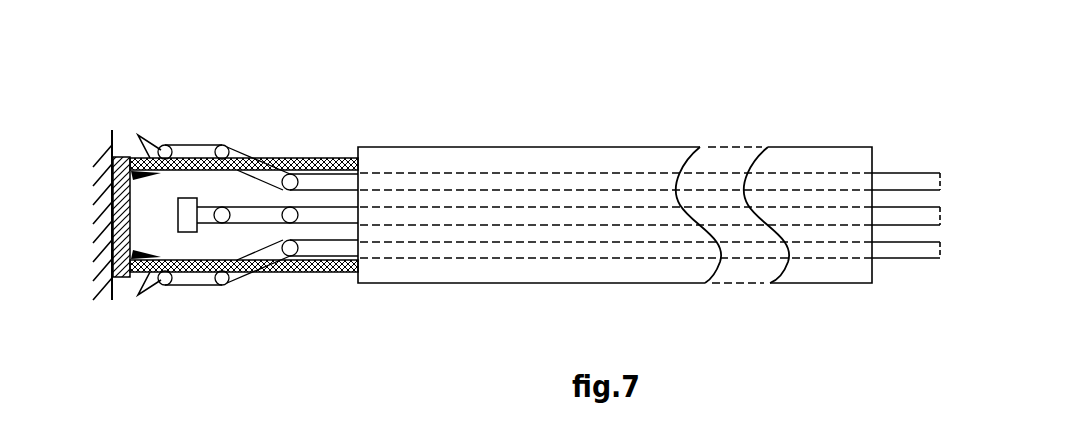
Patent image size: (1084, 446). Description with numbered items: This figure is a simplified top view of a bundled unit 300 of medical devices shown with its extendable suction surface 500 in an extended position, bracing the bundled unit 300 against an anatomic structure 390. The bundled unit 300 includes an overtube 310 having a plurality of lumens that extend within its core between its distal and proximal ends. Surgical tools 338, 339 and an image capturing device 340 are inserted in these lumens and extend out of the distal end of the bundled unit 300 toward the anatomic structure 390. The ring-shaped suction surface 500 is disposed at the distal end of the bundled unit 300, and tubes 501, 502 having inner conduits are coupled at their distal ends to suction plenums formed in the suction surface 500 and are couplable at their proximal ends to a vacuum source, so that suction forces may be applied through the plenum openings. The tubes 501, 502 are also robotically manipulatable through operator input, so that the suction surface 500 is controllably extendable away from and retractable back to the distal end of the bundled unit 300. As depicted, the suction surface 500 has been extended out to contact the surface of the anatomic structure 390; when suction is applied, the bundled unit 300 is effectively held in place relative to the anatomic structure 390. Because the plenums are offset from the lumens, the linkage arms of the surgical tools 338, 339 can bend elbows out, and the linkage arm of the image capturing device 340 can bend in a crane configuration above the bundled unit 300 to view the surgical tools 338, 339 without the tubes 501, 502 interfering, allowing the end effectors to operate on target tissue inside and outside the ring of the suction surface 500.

The bundled unit 300 is at (574, 66).
The overtube 310 is at (562, 147).
The surgical tool 338 is at (233, 131).
The surgical tool 339 is at (212, 303).
The image capturing device 340 is at (166, 224).
The anatomic structure 390 is at (105, 141).
The suction surface 500 is at (134, 228).
The tube 501 is at (273, 160).
The tube 502 is at (275, 272).